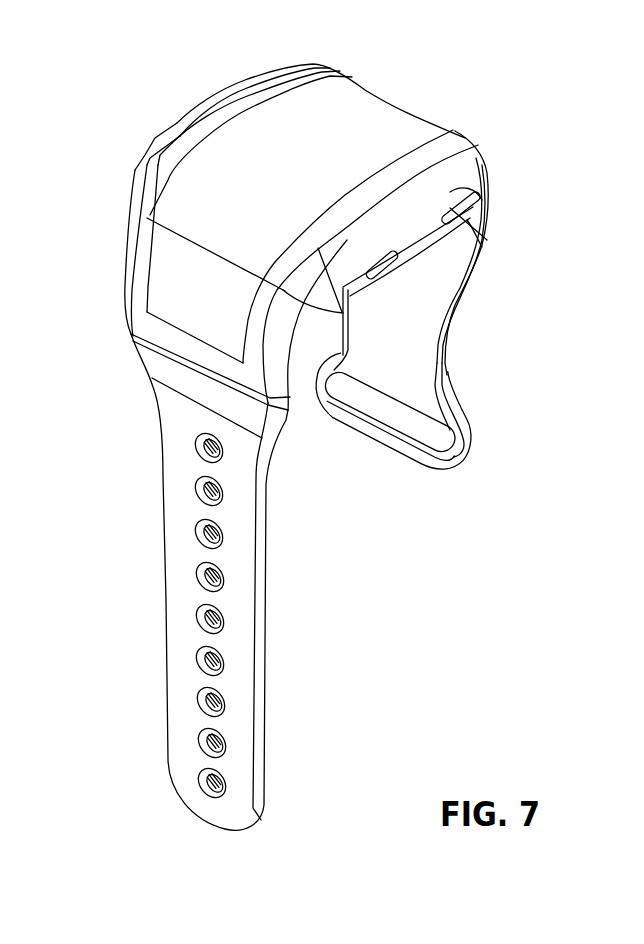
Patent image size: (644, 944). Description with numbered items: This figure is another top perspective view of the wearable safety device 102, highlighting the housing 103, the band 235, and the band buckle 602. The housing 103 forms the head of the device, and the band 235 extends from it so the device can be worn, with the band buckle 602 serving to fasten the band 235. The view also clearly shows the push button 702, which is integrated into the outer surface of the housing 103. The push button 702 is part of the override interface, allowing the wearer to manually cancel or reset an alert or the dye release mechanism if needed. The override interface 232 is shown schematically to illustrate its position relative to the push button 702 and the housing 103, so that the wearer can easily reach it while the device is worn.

The wearable safety device 102 is at (177, 123).
The housing 103 is at (376, 127).
The push button 702 is at (482, 247).
The override interface 232 is at (377, 267).
The band buckle 602 is at (470, 457).
The band 235 is at (265, 694).